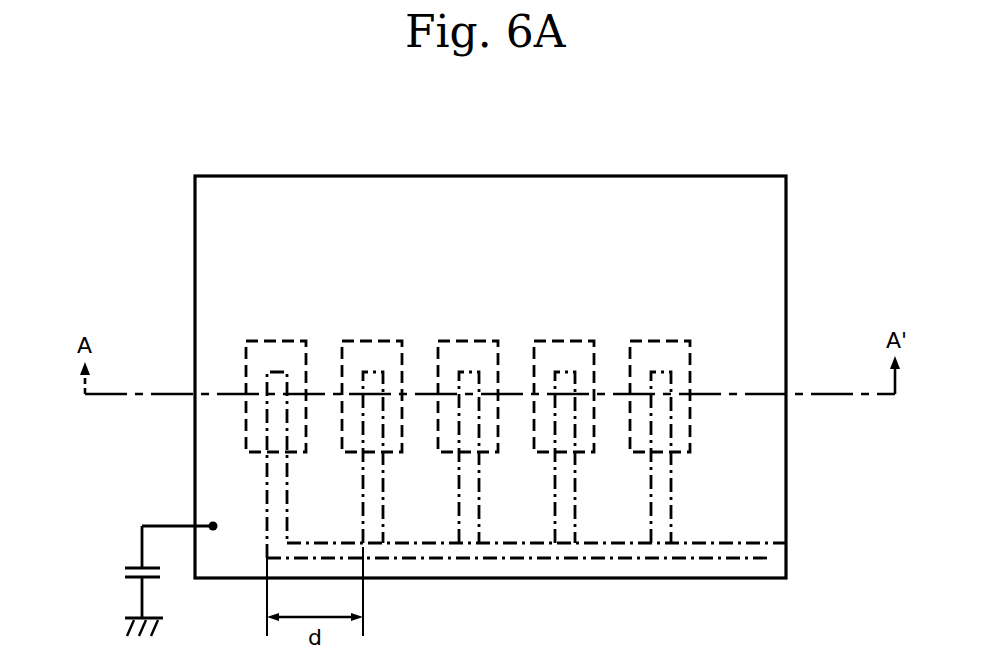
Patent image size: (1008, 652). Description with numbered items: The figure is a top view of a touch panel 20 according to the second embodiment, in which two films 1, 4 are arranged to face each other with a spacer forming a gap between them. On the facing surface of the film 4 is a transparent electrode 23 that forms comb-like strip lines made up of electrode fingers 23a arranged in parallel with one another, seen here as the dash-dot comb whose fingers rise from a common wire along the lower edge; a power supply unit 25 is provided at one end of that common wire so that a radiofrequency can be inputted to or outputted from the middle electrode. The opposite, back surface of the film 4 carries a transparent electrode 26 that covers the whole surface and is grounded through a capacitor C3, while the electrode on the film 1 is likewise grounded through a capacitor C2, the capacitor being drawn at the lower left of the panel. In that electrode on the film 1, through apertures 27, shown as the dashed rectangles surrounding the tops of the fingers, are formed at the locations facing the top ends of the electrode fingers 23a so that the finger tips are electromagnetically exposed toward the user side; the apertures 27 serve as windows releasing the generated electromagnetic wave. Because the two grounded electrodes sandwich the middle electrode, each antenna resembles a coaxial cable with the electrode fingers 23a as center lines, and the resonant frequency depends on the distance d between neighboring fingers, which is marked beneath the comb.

The touch panel 20 is at (260, 158).
The film 1 is at (487, 212).
The film 4 is at (490, 377).
The transparent electrode 26 is at (490, 377).
The apertures 27 is at (680, 347).
The transparent electrode 23 is at (593, 552).
The electrode fingers 23a is at (663, 505).
The power supply unit 25 is at (772, 557).
The capacitor C2 is at (131, 579).
The capacitor C3 is at (171, 579).